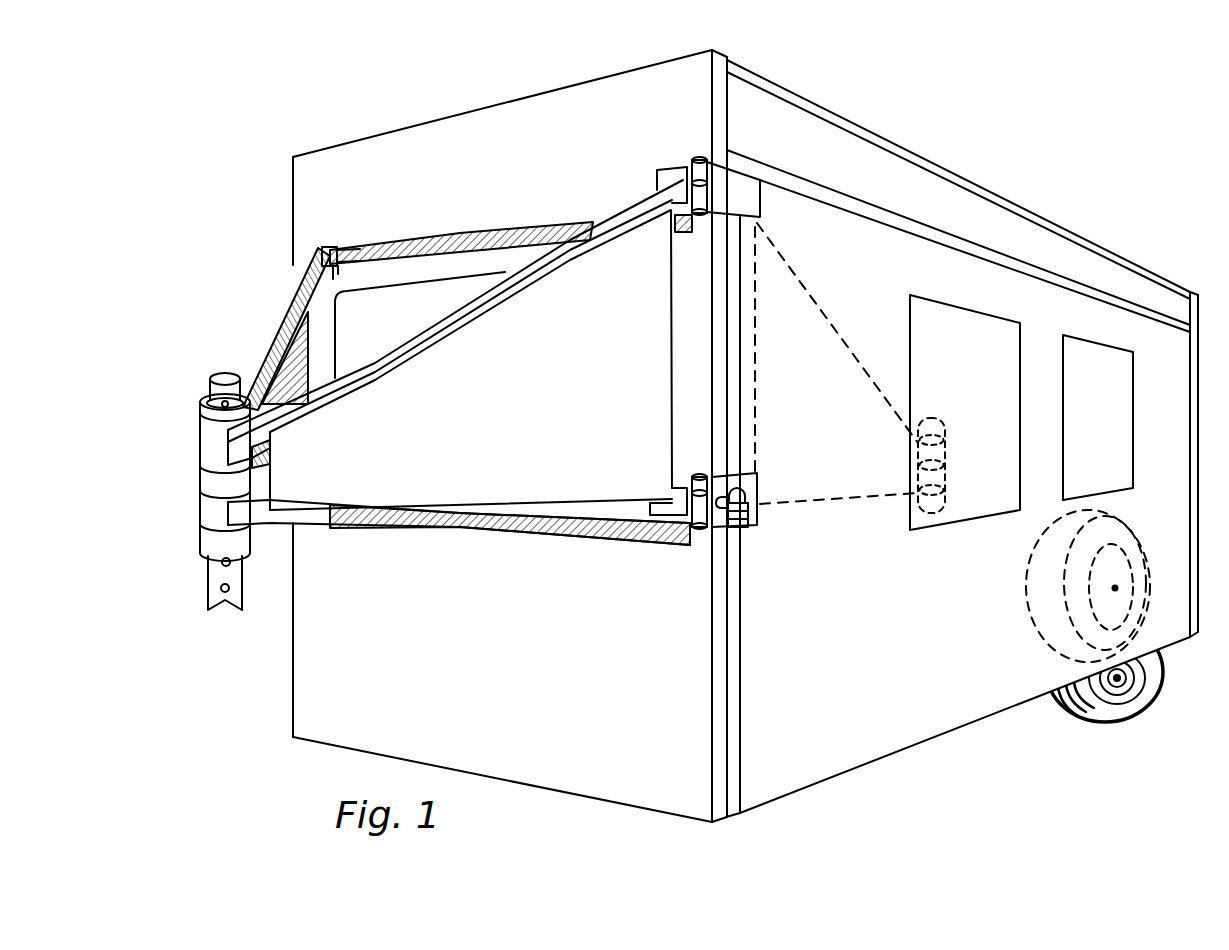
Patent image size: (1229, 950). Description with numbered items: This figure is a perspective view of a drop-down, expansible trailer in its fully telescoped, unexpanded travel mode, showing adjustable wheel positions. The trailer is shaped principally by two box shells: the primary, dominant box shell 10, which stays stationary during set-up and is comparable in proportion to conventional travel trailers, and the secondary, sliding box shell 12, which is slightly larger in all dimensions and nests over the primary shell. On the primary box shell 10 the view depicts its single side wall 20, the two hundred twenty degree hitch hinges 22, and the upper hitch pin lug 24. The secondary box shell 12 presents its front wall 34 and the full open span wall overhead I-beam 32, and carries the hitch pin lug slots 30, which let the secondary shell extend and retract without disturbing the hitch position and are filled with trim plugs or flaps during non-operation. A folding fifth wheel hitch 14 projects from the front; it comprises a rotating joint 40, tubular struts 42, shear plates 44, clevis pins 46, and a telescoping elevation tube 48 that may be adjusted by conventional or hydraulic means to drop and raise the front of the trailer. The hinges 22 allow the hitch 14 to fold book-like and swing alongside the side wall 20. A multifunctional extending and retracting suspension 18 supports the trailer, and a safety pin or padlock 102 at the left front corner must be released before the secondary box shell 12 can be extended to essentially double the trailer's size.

The primary box shell 10 is at (976, 735).
The secondary box shell 12 is at (518, 84).
The fifth wheel hitch 14 is at (352, 532).
The suspension 18 is at (1130, 725).
The single side wall 20 is at (860, 737).
The hitch hinges 22 is at (752, 212).
The upper hitch pin lug 24 is at (360, 250).
The hitch pin lug slots 30 is at (527, 235).
The full open span wall overhead I-beam 32 is at (995, 222).
The secondary box shell front wall 34 is at (500, 752).
The rotating joint 40 is at (218, 480).
The tubular struts 42 is at (282, 333).
The shear plates 44 is at (536, 483).
The clevis pins 46 is at (337, 250).
The telescoping elevation tube 48 is at (235, 573).
The safety pin or padlock 102 is at (750, 527).